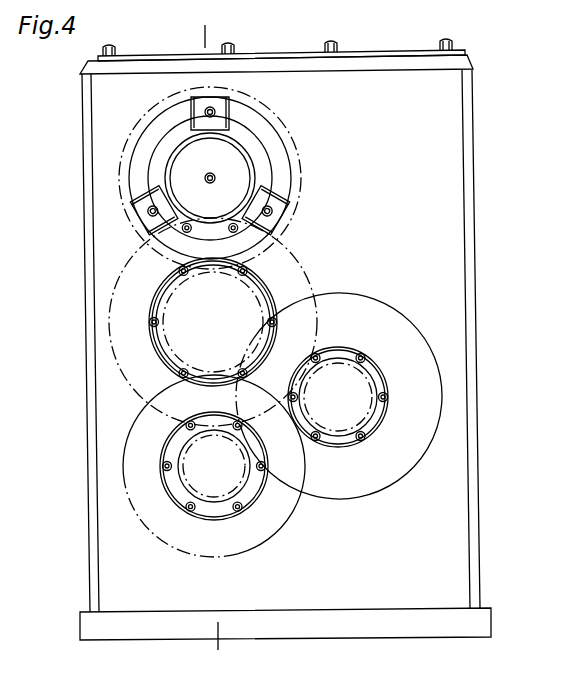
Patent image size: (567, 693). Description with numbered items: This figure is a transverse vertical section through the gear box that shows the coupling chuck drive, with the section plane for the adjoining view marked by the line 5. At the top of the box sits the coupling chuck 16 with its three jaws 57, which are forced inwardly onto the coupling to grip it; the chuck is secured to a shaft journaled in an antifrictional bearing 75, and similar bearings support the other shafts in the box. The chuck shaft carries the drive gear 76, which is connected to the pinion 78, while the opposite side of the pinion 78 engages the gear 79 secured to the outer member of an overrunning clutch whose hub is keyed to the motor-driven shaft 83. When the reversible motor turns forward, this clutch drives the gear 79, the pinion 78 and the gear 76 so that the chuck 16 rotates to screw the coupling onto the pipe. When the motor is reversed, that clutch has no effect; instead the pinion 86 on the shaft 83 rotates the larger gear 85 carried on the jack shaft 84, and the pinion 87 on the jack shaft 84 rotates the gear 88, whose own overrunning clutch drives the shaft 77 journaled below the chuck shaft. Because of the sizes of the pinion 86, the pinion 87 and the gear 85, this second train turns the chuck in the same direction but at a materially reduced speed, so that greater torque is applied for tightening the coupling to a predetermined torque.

The section line 5- 5 is at (205, 25).
The coupling chuck 16 is at (275, 162).
The jaws 57 is at (191, 129).
The bearing 75 is at (220, 153).
The drive gear 76 is at (290, 223).
The shaft 77 is at (243, 298).
The pinion 78 is at (163, 311).
The gear 79 is at (263, 543).
The shaft 83 is at (197, 477).
The jack shaft 84 is at (346, 417).
The gear 85 is at (373, 500).
The pinion 86 is at (246, 488).
The pinion 87 is at (372, 428).
The gear 88 is at (315, 320).